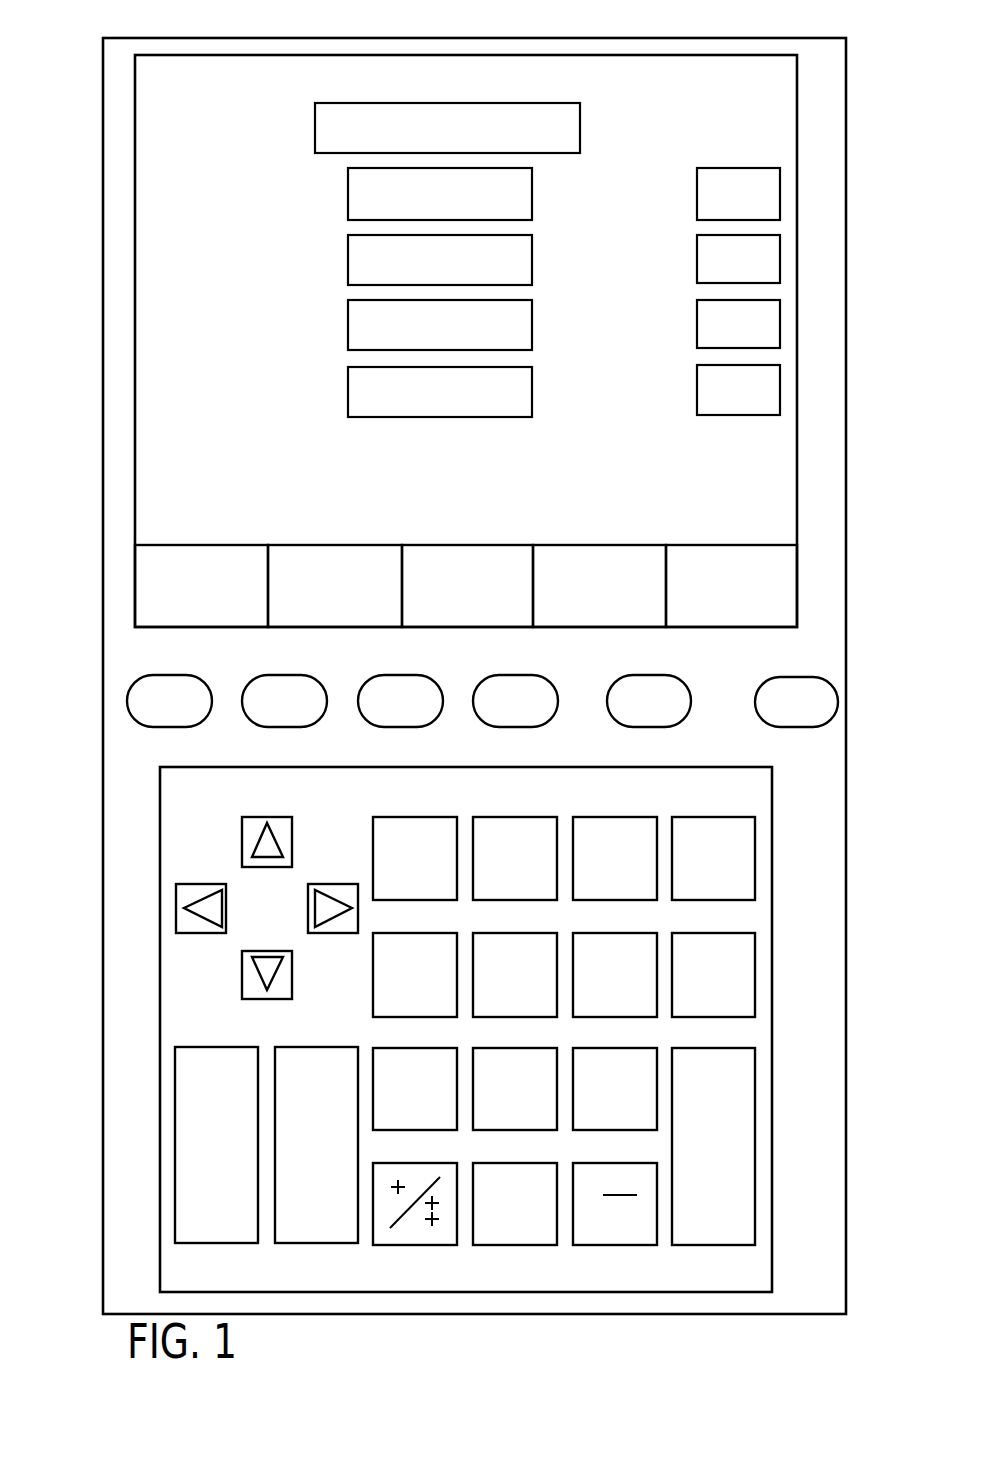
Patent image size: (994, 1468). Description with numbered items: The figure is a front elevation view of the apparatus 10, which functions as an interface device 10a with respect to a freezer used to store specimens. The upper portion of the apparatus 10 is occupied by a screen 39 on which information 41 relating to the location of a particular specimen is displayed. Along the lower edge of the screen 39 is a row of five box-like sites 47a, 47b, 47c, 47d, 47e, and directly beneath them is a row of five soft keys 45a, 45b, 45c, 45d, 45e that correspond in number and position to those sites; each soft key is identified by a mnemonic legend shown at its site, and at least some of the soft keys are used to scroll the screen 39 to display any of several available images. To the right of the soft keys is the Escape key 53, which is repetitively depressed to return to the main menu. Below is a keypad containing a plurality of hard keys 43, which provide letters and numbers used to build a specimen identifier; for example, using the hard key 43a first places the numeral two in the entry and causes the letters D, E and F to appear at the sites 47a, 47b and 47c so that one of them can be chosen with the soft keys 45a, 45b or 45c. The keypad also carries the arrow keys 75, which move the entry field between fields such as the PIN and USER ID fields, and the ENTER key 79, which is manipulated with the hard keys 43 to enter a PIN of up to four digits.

The apparatus 10 is at (92, 246).
The interface device 10a is at (101, 690).
The screen 39 is at (155, 438).
The information 41 is at (695, 130).
The hard keys 43 is at (375, 997).
The hard key 43a is at (497, 817).
The soft key 45a is at (165, 677).
The soft key 45b is at (270, 677).
The soft key 45c is at (396, 677).
The soft key 45d is at (513, 677).
The soft key 45e is at (645, 677).
The site 47a is at (195, 545).
The site 47b is at (312, 545).
The site 47c is at (440, 545).
The site 47d is at (572, 545).
The site 47e is at (697, 545).
The Escape key 53 is at (800, 728).
The arrow keys 75 is at (182, 823).
The ENTER key 79 is at (700, 1230).